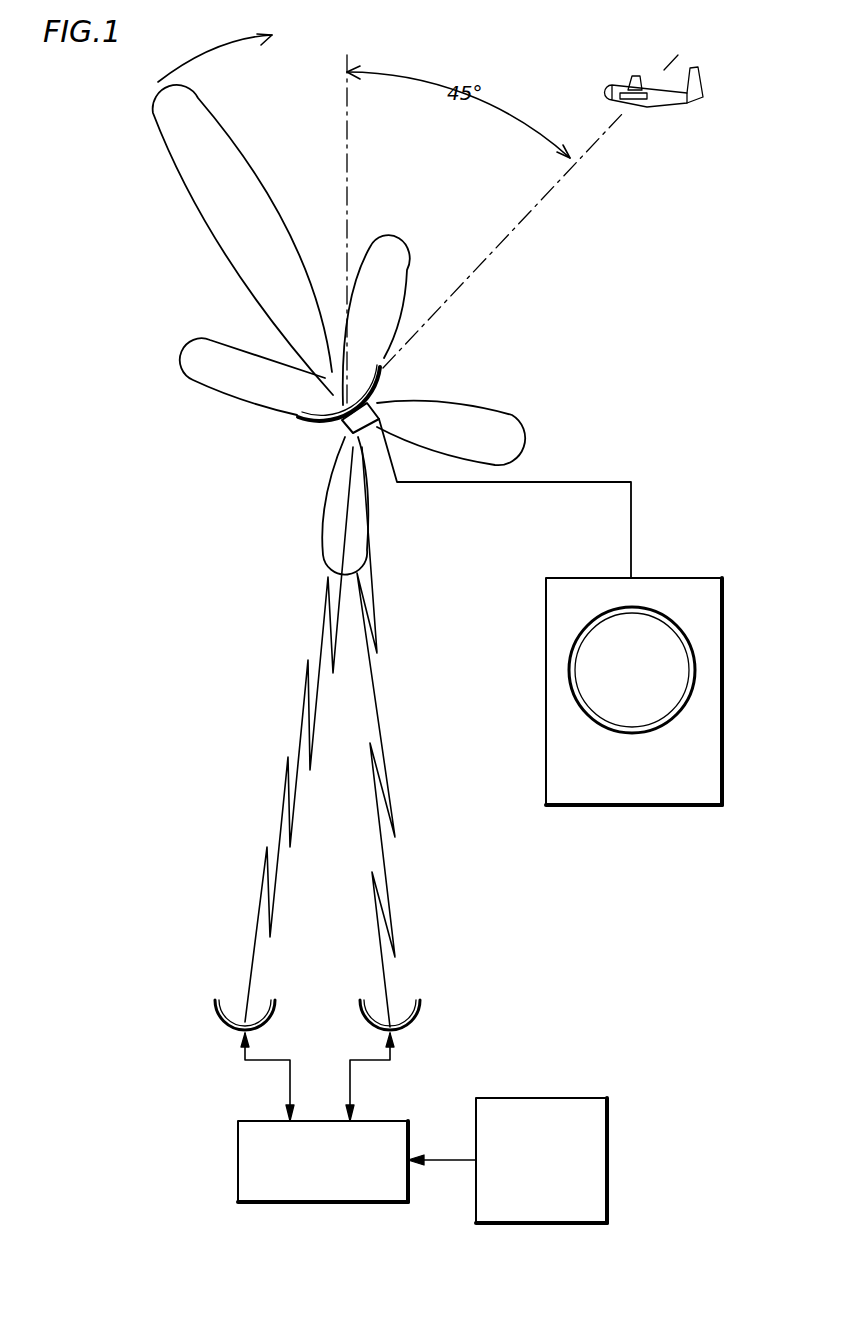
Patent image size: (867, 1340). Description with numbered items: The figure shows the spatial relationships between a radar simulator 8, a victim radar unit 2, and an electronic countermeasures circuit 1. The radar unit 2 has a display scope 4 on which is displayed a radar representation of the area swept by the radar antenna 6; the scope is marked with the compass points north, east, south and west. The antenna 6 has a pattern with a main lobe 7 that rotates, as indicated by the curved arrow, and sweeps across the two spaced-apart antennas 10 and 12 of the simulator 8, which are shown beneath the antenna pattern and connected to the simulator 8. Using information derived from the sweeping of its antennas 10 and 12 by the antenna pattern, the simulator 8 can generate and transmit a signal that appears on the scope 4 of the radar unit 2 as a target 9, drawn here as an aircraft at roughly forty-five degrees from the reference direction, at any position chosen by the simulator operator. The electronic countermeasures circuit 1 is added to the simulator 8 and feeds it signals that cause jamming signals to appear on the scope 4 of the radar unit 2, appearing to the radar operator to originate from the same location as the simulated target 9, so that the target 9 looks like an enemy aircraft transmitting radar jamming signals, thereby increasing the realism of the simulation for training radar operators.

The electronic countermeasures circuit 1 is at (607, 1098).
The radar unit 2 is at (722, 578).
The display scope 4 is at (648, 606).
The radar antenna 6 is at (383, 378).
The main lobe 7 is at (233, 142).
The radar simulator 8 is at (410, 1121).
The target 9 is at (603, 90).
The antenna 10 is at (273, 1010).
The antenna 12 is at (358, 1003).